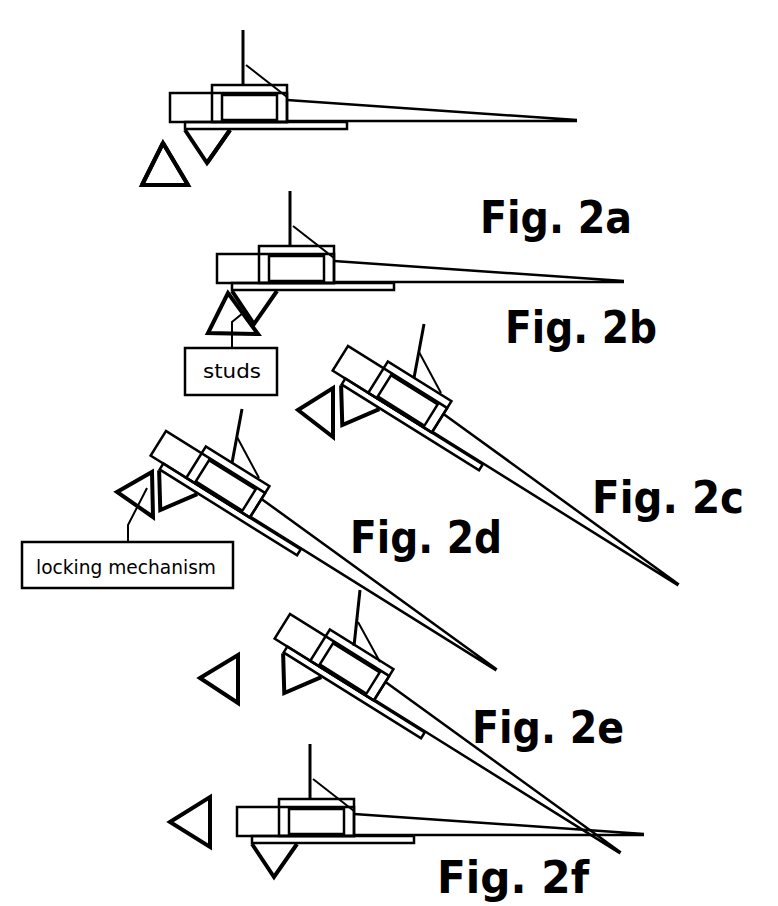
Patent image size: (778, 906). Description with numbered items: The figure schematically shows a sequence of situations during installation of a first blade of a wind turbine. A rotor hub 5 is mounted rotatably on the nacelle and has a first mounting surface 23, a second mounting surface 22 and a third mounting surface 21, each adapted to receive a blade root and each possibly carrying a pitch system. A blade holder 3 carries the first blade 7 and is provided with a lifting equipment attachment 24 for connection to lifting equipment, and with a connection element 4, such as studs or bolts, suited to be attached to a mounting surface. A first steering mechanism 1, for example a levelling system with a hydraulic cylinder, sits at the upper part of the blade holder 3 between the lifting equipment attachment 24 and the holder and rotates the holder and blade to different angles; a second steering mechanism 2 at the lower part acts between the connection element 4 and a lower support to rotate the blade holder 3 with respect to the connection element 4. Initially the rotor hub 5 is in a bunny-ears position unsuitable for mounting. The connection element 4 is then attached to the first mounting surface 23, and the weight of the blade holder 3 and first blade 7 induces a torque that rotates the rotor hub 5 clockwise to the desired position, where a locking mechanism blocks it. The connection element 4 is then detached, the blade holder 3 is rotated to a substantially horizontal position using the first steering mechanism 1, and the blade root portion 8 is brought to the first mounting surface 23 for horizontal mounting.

The first steering mechanism 1 is at (255, 63).
The second steering mechanism 2 is at (235, 143).
The blade holder 3 is at (313, 130).
The connection element 4 is at (205, 165).
The rotor hub 5 is at (165, 170).
The first blade 7 is at (465, 112).
The blade root portion 8 is at (168, 92).
The third mounting surface 21 is at (143, 167).
The second mounting surface 22 is at (168, 190).
The first mounting surface 23 is at (177, 155).
The lifting equipment attachment 24 is at (248, 65).